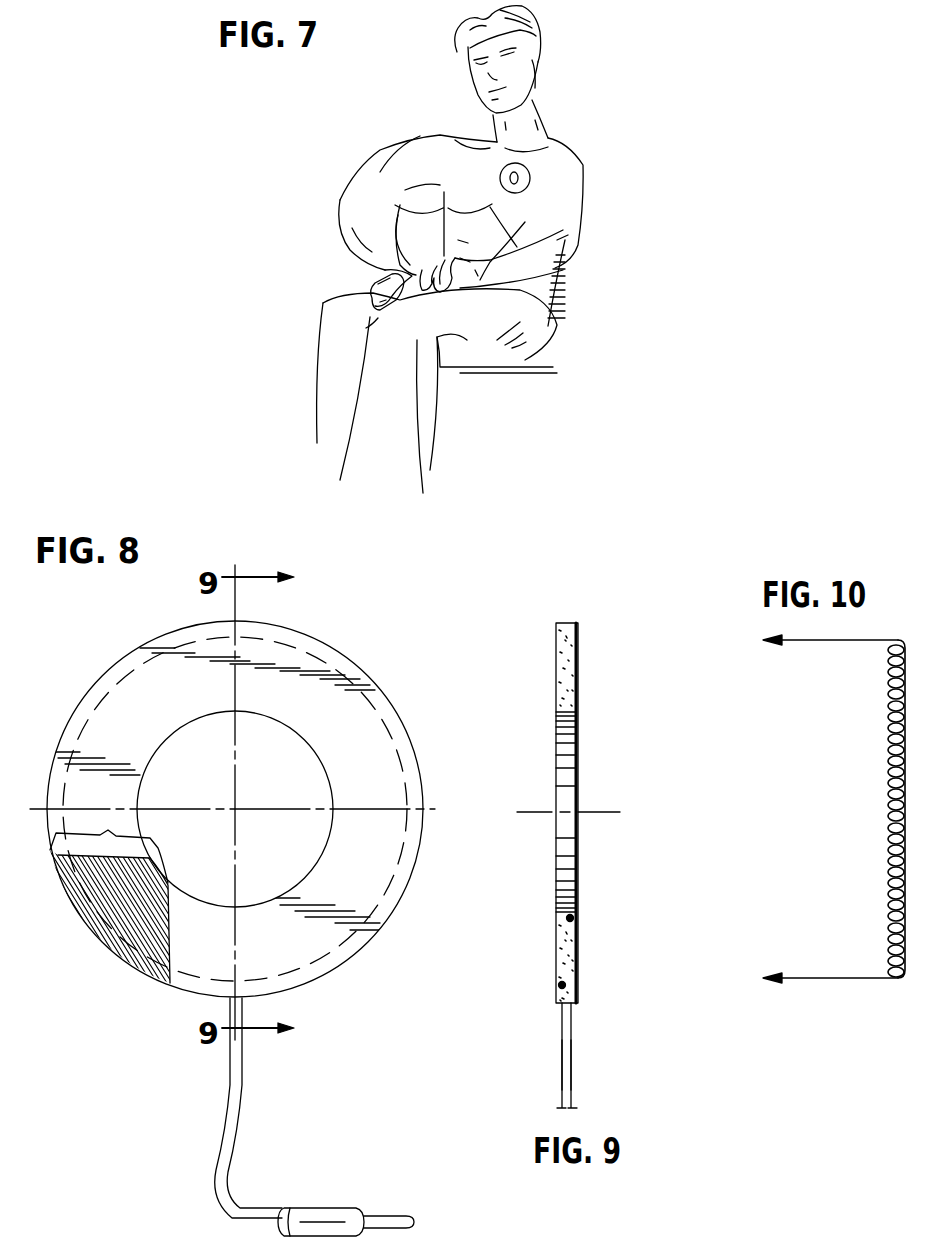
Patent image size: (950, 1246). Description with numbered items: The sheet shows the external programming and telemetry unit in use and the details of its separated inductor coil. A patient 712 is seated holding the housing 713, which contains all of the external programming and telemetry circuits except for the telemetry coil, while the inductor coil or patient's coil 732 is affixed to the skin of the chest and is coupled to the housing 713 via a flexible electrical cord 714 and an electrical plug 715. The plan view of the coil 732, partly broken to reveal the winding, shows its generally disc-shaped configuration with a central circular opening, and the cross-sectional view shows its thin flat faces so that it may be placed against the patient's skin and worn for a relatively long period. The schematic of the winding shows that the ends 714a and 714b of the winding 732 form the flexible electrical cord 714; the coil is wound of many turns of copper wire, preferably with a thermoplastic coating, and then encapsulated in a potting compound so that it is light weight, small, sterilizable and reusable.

In FIG. 7, the patient 712 is at (565, 236).
In FIG. 7, the housing 713 is at (380, 284).
In FIG. 8, the flexible electrical cord 714 is at (244, 1092).
In FIG. 9, the flexible electrical cord 714 is at (567, 1040).
In FIG. 9, the winding end 714a is at (560, 1063).
In FIG. 10, the winding end 714a is at (805, 641).
In FIG. 9, the winding end 714b is at (574, 1070).
In FIG. 10, the winding end 714b is at (814, 978).
In FIG. 8, the electrical plug 715 is at (366, 1183).
In FIG. 7, the inductor coil 732 is at (531, 170).
In FIG. 8, the inductor coil 732 is at (125, 945).
In FIG. 9, the inductor coil 732 is at (552, 650).
In FIG. 10, the inductor coil 732 is at (888, 782).